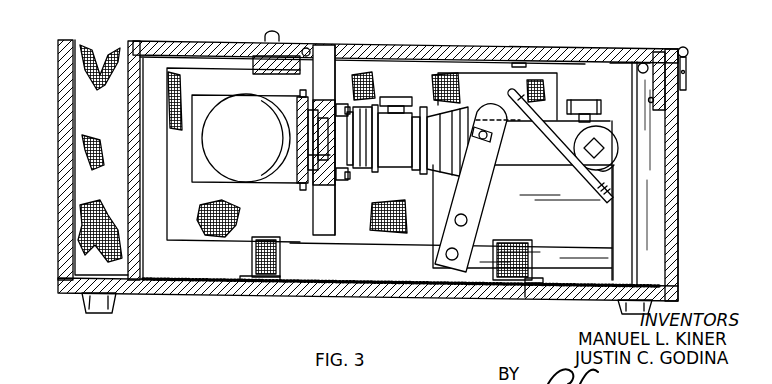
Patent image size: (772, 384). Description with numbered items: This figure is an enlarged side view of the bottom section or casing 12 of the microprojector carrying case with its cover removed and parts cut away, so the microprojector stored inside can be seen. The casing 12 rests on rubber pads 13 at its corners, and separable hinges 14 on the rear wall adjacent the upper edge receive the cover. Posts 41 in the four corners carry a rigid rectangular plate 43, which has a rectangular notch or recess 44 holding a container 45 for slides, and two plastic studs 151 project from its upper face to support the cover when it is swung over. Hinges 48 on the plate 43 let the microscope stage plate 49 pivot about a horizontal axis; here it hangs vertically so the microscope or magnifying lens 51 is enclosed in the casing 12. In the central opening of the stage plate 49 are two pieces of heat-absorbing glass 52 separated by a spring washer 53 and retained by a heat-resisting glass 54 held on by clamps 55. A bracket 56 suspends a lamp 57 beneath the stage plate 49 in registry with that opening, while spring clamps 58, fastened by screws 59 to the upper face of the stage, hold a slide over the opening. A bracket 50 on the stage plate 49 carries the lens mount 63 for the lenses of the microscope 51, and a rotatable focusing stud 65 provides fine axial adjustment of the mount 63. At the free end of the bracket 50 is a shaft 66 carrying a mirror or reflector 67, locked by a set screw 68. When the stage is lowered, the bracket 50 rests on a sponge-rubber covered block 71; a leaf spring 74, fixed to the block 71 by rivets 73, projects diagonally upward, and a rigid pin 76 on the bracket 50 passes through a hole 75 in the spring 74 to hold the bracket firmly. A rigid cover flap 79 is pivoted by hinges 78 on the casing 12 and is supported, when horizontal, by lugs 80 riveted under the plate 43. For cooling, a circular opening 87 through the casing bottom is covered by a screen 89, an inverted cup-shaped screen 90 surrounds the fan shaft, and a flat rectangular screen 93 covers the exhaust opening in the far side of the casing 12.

The bottom section or casing 12 is at (668, 152).
The rubber pads 13 is at (114, 304).
The separable hinges 14 is at (688, 53).
The posts 41 is at (660, 252).
The rigid rectangular plate 43 is at (296, 50).
The rectangular notch or recess 44 is at (136, 41).
The container for slides 45 is at (96, 70).
The hinges 48 is at (311, 44).
The microscope stage plate 49 is at (336, 50).
The bracket 50 is at (546, 140).
The microscope or magnifying lens 51 is at (298, 108).
The heat-absorbing glass 52 is at (314, 124).
The spring washer 53 is at (318, 140).
The heat-resisting glass 54 is at (306, 156).
The clamps 55 is at (300, 92).
The bracket 56 is at (198, 182).
The lamp 57 is at (255, 148).
The spring clamps 58 is at (343, 104).
The screws 59 is at (349, 110).
The lens mount 63 is at (423, 170).
The rotatable focusing stud 65 is at (397, 97).
The shaft 66 is at (604, 139).
The mirror or reflector 67 is at (614, 168).
The set screw 68 is at (586, 100).
The sponge-rubber covered block 71 is at (586, 244).
The rivets 73 is at (453, 237).
The leaf spring 74 is at (489, 187).
The hole 75 is at (483, 142).
The rigid pin 76 is at (499, 150).
The hinges 78 is at (656, 51).
The rigid cover flap 79 is at (566, 49).
The lugs 80 is at (516, 49).
The circular opening 87 is at (262, 284).
The screen 89 is at (313, 292).
The inverted cup-shaped screen 90 is at (251, 246).
The flat rectangular screen 93 is at (170, 234).
The plastic studs 151 is at (266, 37).